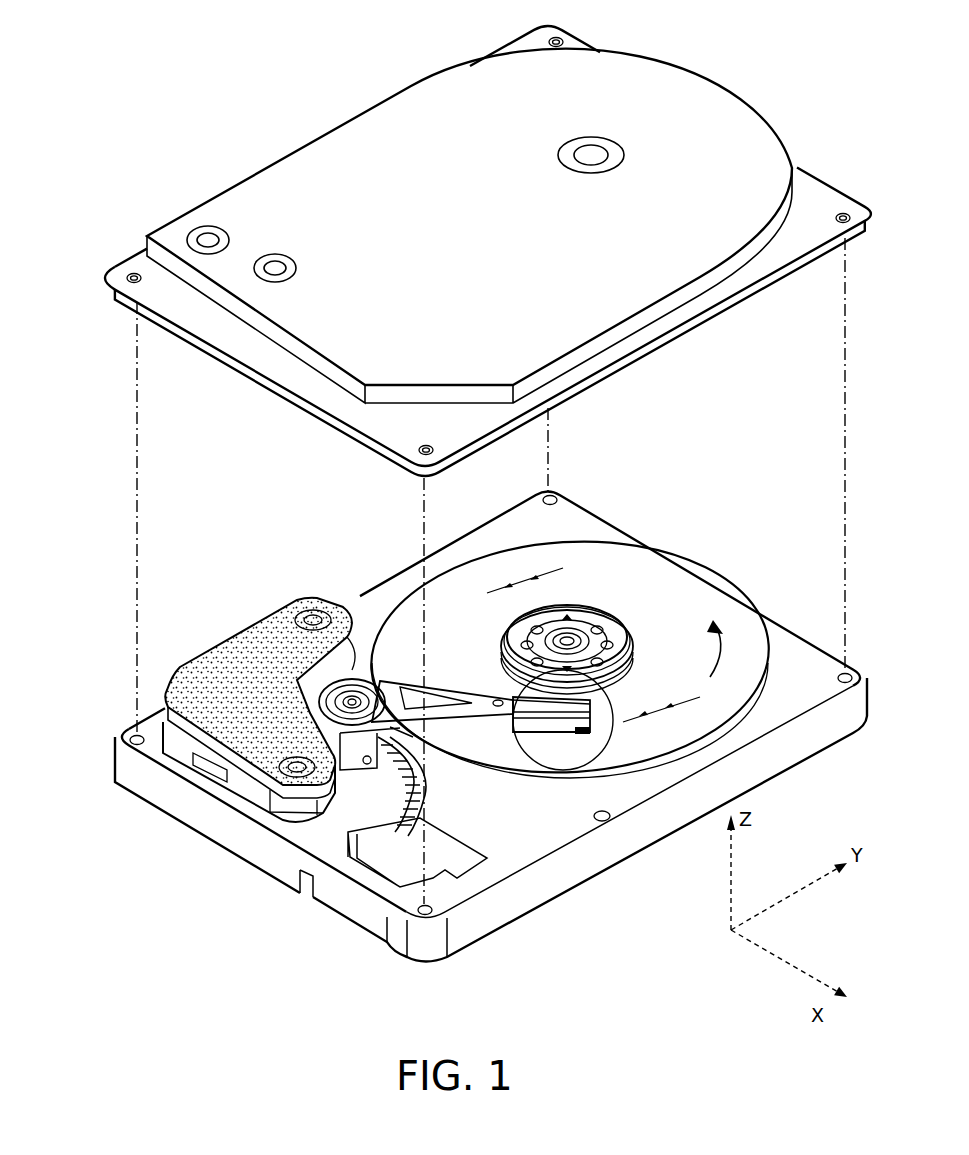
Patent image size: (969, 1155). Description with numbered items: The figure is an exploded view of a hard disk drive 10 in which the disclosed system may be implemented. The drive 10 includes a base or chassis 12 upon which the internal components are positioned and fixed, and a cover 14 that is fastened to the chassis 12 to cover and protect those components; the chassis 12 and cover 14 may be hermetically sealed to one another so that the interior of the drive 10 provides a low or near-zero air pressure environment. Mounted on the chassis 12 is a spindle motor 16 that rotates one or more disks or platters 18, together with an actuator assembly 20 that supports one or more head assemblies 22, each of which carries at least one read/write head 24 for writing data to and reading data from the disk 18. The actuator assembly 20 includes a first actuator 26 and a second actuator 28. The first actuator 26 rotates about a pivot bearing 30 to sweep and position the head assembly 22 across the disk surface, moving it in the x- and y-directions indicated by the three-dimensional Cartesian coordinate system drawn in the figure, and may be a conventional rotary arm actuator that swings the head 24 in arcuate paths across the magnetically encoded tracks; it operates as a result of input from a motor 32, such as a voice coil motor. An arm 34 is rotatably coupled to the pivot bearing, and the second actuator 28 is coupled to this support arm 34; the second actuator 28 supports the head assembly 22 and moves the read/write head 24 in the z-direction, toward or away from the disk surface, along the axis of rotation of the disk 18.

The hard disk drive 10 is at (148, 73).
The base or chassis 12 is at (782, 640).
The cover 14 is at (390, 124).
The spindle motor 16 is at (626, 608).
The disk 18 is at (456, 582).
The actuator assembly 20 is at (425, 666).
The head assembly 22 is at (588, 748).
The read/write head 24 is at (572, 736).
The first actuator 26 is at (366, 698).
The second actuator 28 is at (553, 736).
The pivot bearing 30 is at (340, 612).
The motor 32 is at (190, 755).
The arm 34 is at (440, 722).